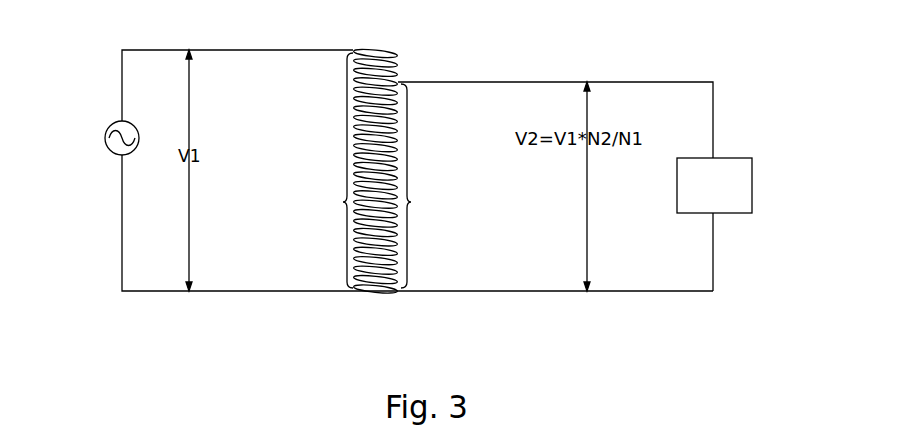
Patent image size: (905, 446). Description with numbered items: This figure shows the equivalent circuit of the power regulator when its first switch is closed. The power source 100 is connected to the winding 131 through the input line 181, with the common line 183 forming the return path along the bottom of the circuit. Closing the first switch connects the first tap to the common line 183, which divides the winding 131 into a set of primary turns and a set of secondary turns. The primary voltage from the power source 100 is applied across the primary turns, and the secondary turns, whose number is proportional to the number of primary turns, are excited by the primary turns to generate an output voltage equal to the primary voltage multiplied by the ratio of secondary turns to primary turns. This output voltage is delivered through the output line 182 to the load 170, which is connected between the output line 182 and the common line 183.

The power source 100 is at (106, 143).
The winding 131 is at (398, 57).
The load 170 is at (752, 190).
The input line 181 is at (121, 69).
The output line 182 is at (713, 98).
The common line 183 is at (168, 291).